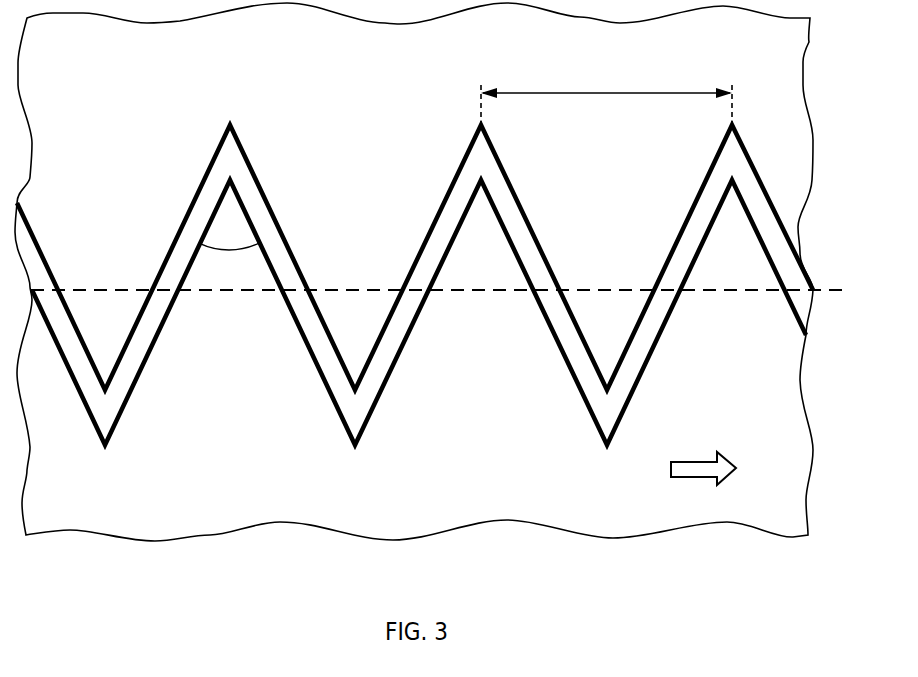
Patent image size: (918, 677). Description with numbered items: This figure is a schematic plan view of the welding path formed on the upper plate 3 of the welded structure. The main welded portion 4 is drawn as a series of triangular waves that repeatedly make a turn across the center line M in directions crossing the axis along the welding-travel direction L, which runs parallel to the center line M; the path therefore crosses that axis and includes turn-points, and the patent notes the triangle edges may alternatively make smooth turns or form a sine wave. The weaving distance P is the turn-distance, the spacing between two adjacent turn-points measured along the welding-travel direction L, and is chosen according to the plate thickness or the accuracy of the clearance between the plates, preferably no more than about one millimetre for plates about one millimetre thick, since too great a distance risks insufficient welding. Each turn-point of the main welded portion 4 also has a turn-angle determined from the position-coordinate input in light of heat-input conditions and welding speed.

The upper plate 3 is at (404, 68).
The main welded portion 4 is at (232, 153).
The center line M is at (459, 289).
The weaving distance P is at (606, 92).
The welding-travel direction L is at (689, 469).